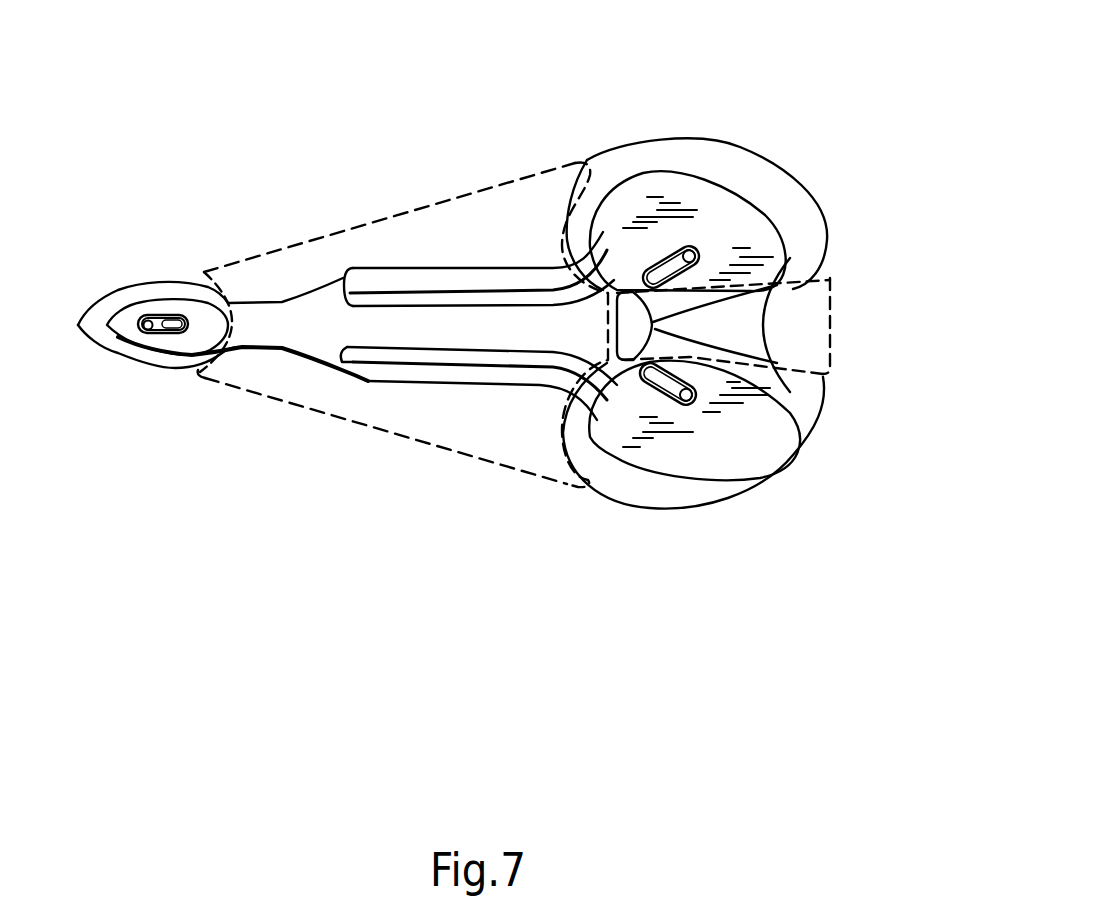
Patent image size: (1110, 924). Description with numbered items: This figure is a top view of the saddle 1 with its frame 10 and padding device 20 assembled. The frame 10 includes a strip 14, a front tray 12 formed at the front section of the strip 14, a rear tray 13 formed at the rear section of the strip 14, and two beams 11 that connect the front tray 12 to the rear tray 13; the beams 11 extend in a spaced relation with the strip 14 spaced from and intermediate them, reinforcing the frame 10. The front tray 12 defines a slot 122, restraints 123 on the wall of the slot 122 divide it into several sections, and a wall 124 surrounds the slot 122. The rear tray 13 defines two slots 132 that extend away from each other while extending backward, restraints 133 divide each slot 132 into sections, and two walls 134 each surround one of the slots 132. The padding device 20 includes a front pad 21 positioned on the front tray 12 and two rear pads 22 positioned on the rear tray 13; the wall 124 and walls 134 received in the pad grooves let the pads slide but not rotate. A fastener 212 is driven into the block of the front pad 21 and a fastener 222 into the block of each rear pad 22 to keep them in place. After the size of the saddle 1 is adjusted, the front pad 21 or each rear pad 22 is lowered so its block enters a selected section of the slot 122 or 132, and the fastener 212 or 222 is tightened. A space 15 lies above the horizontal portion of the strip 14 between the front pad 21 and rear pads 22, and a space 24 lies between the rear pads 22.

The saddle 1 is at (352, 78).
The frame 10 is at (357, 480).
The beams 11 is at (418, 372).
The front tray 12 is at (228, 332).
The rear tray 13 is at (760, 417).
The strip 14 is at (467, 327).
The space 15 is at (400, 190).
The padding device 20 is at (711, 122).
The front pad 21 is at (200, 280).
The rear pads 22 is at (640, 155).
The space 24 is at (860, 322).
The slot 122 is at (173, 331).
The restraints 123 is at (165, 329).
The wall 124 is at (147, 322).
The slots 132 is at (650, 390).
The restraints 133 is at (660, 393).
The walls 134 is at (697, 403).
The fastener 212 is at (146, 330).
The fasteners 222 is at (683, 400).